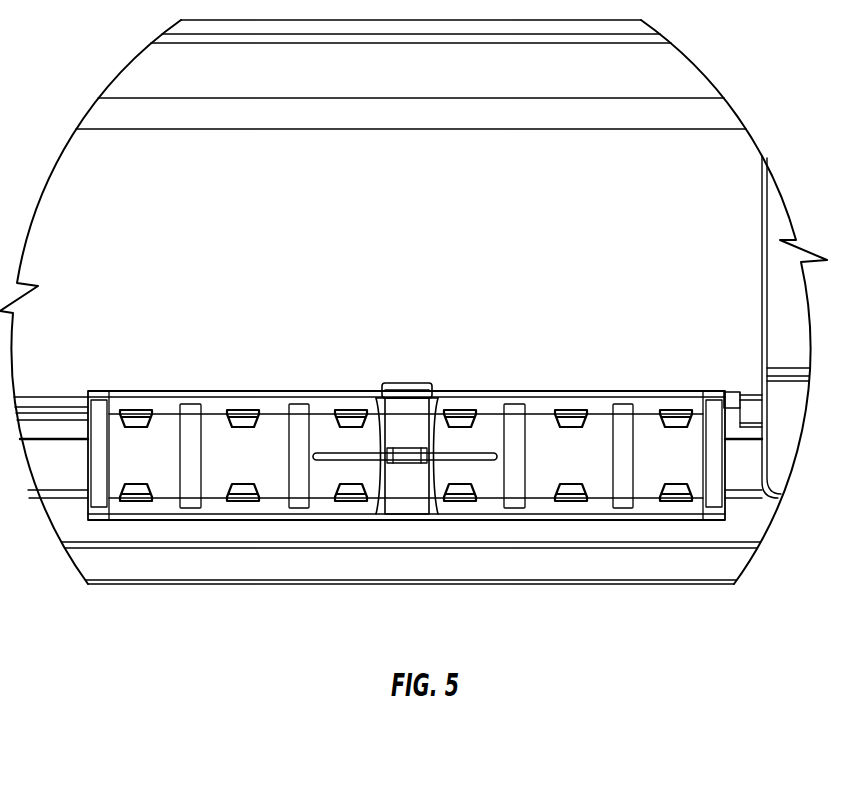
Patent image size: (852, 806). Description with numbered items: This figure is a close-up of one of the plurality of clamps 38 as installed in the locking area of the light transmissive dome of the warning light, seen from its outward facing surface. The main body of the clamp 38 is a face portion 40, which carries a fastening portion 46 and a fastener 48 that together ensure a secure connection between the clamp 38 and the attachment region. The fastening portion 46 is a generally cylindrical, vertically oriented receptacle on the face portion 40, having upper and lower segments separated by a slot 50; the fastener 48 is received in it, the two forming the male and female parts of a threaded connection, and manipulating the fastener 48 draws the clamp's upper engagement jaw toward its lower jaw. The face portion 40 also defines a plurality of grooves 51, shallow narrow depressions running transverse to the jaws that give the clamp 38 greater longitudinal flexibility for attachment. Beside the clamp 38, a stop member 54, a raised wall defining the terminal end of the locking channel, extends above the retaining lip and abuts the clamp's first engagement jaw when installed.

The clamp 38 is at (286, 362).
The face portion 40 is at (252, 460).
The fastening portion 46 is at (418, 415).
The fastener 48 is at (389, 395).
The slot 50 is at (478, 455).
The grooves 51 is at (192, 502).
The stop member 54 is at (732, 398).